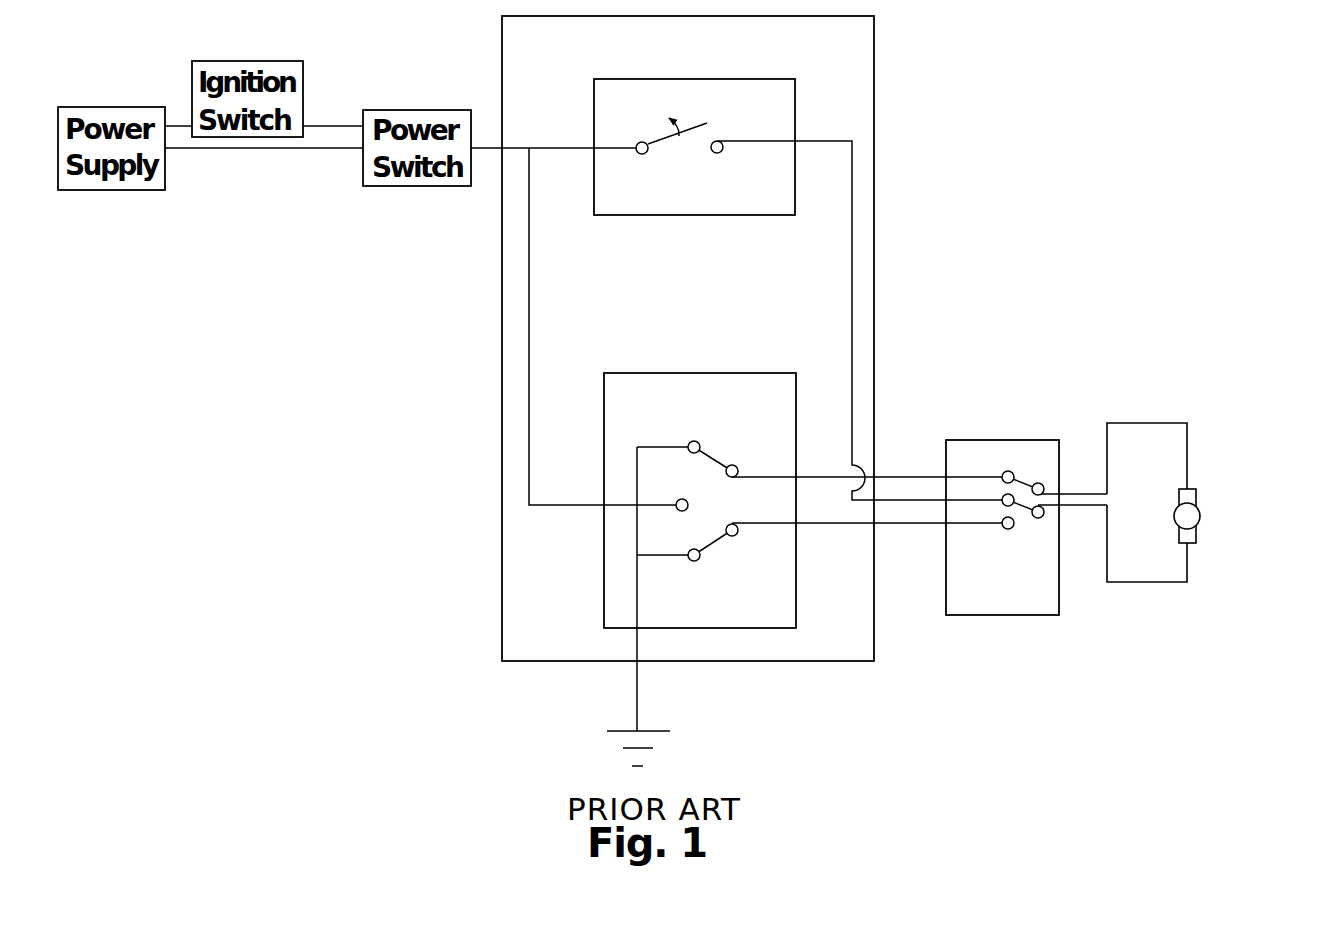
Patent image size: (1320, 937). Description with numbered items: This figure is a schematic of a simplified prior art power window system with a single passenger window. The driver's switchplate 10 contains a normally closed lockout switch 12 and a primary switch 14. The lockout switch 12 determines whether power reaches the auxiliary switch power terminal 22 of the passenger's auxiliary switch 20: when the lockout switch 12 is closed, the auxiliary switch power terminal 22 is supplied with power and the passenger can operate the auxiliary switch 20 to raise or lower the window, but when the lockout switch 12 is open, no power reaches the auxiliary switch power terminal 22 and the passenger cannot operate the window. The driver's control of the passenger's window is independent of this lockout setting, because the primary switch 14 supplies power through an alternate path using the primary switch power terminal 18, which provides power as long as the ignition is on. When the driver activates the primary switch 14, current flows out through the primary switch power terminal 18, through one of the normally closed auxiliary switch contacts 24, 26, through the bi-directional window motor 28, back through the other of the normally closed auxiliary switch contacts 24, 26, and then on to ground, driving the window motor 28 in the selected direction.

The driver's switchplate 10 is at (885, 48).
The lockout switch 12 is at (800, 123).
The primary switch 14 is at (763, 360).
The primary switch power terminal 18 is at (675, 513).
The auxiliary switch 20 is at (1001, 512).
The auxiliary switch power terminal 22 is at (1013, 508).
The auxiliary switch contact 24 is at (1003, 468).
The auxiliary switch contact 26 is at (1002, 530).
The window motor 28 is at (1205, 510).